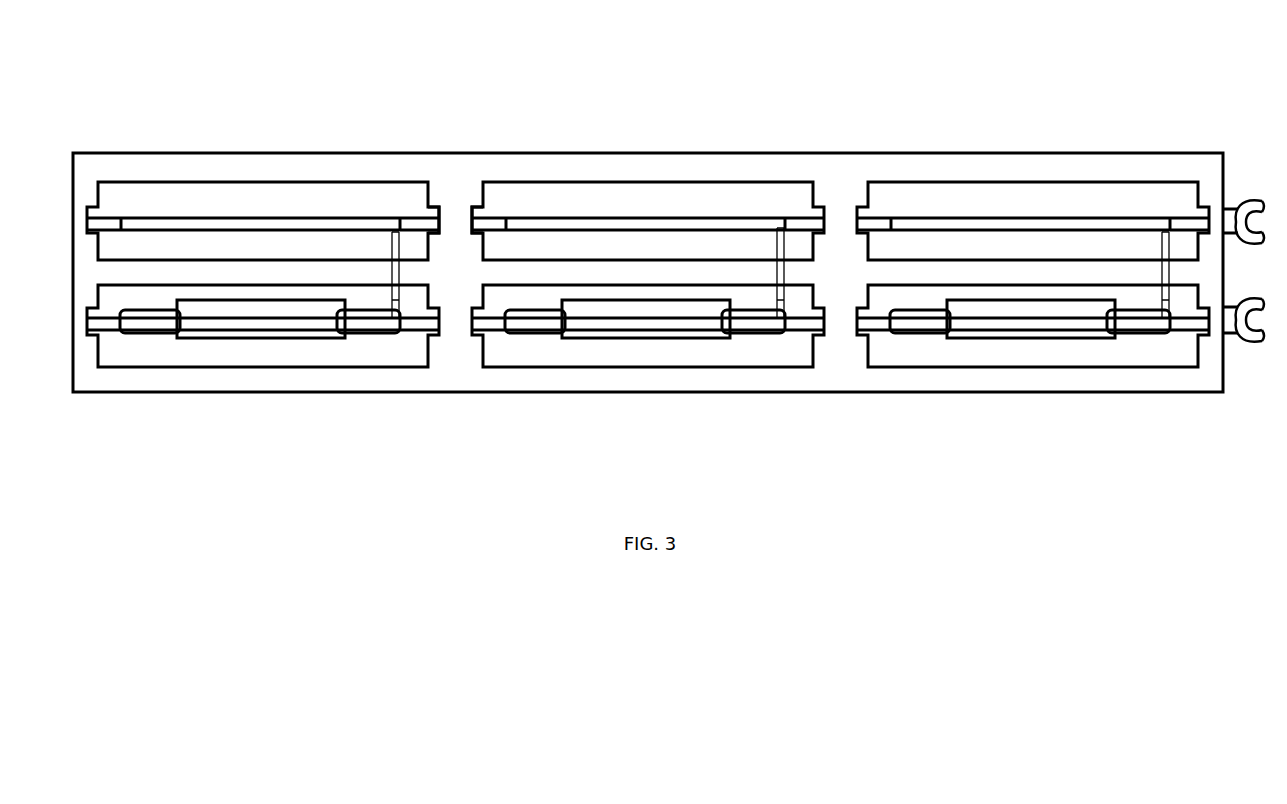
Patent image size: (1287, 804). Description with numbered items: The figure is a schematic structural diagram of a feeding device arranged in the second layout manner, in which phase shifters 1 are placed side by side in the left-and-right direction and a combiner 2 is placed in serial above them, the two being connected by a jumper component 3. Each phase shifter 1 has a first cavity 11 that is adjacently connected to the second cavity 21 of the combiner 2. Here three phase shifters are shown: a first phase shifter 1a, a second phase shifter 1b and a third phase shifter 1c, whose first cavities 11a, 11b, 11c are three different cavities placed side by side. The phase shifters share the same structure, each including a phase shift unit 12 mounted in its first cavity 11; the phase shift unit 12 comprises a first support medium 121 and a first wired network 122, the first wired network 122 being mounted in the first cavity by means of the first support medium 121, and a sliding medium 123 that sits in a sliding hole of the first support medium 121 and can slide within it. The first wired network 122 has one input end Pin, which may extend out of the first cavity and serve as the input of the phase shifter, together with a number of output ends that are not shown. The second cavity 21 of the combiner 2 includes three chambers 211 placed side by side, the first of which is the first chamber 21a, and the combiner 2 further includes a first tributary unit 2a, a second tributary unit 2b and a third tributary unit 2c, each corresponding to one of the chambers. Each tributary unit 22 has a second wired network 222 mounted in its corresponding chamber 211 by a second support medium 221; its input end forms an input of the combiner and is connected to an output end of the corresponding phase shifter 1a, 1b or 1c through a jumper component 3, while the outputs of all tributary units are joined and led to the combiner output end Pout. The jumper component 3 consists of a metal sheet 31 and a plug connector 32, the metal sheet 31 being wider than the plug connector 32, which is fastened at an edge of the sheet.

The phase shifter 1 is at (263, 383).
The first cavity 11 is at (232, 350).
The first phase shifter 1a is at (263, 383).
The first cavity of the first phase shifter 11a is at (263, 383).
The second phase shifter 1b is at (648, 383).
The first cavity of the second phase shifter 11b is at (580, 350).
The third phase shifter 1c is at (1033, 383).
The first cavity of the third phase shifter 11c is at (935, 350).
The phase shift unit 12 is at (145, 395).
The first support medium 121 is at (110, 333).
The first wired network 122 is at (147, 312).
The sliding medium 123 is at (290, 335).
The combiner 2 is at (263, 163).
The second cavity 21 is at (290, 208).
The first tributary unit 2a is at (263, 162).
The first chamber 21a is at (263, 162).
The second tributary unit 2b is at (648, 165).
The third tributary unit 2c is at (1005, 202).
The chamber 211 is at (605, 203).
The tributary unit 22 is at (425, 149).
The second support medium 221 is at (396, 149).
The second wired network 222 is at (227, 215).
The jumper component 3 is at (813, 350).
The metal sheet 31 is at (786, 269).
The plug connector 32 is at (779, 318).
The output end of the combiner Pout is at (1256, 197).
The input end of the phase shift unit Pin is at (1254, 348).